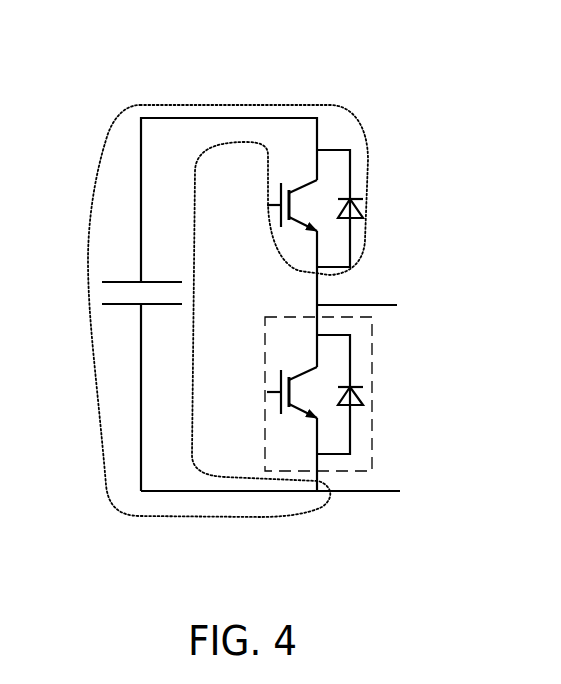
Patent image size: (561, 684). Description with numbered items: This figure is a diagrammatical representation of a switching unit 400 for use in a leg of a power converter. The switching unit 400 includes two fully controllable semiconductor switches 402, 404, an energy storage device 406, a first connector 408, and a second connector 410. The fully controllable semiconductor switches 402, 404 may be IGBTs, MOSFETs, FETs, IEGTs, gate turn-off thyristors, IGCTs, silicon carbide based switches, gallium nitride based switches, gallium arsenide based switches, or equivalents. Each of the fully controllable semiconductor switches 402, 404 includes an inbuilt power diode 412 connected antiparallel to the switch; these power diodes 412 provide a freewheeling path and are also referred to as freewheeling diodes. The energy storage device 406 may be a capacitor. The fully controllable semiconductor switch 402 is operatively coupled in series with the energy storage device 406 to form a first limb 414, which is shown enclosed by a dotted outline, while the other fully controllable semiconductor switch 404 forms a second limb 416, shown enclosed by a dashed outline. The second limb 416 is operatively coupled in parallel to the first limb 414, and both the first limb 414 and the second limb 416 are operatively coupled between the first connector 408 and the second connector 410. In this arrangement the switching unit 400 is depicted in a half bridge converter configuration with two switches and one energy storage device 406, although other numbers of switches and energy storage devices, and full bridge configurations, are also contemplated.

The switching unit 400 is at (417, 43).
The fully controllable semiconductor switch 402 is at (292, 186).
The fully controllable semiconductor switch 404 is at (280, 380).
The energy storage device 406 is at (153, 280).
The first connector 408 is at (336, 304).
The second connector 410 is at (382, 493).
The power diode 412 is at (360, 393).
The first limb 414 is at (105, 155).
The second limb 416 is at (374, 450).